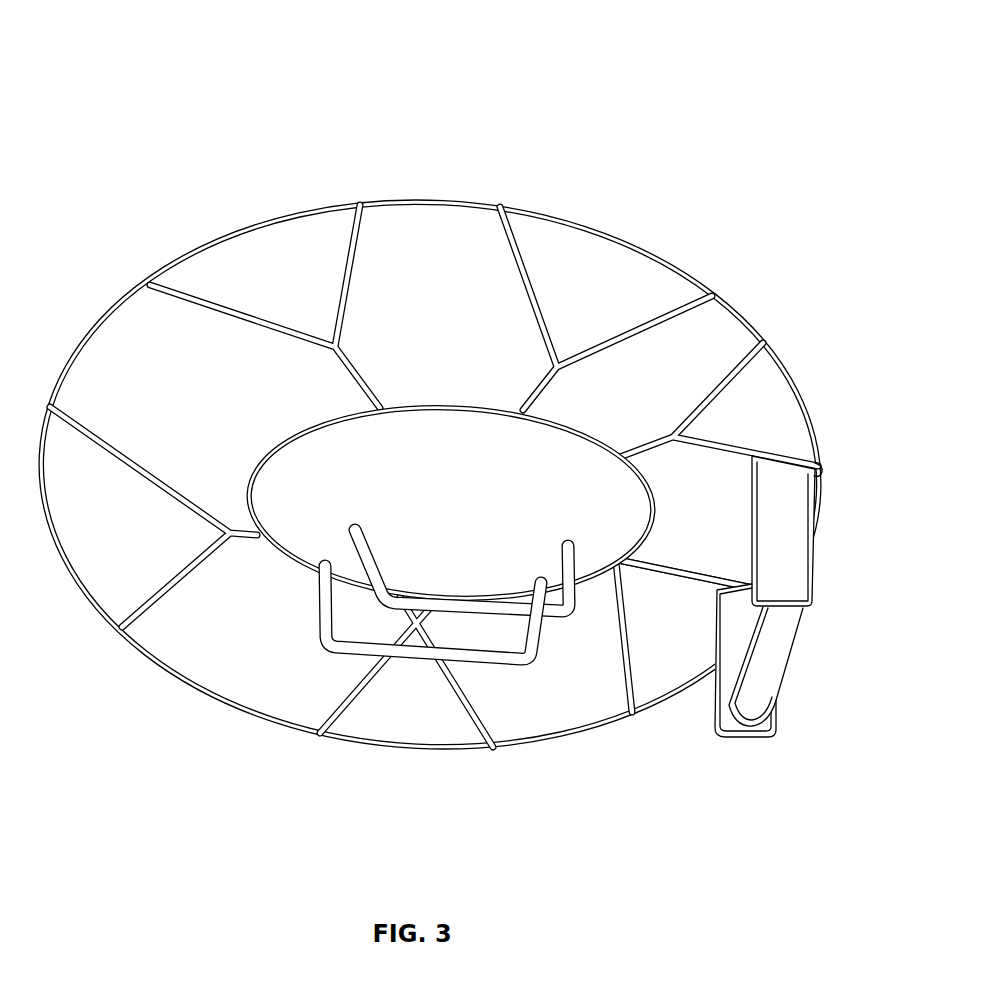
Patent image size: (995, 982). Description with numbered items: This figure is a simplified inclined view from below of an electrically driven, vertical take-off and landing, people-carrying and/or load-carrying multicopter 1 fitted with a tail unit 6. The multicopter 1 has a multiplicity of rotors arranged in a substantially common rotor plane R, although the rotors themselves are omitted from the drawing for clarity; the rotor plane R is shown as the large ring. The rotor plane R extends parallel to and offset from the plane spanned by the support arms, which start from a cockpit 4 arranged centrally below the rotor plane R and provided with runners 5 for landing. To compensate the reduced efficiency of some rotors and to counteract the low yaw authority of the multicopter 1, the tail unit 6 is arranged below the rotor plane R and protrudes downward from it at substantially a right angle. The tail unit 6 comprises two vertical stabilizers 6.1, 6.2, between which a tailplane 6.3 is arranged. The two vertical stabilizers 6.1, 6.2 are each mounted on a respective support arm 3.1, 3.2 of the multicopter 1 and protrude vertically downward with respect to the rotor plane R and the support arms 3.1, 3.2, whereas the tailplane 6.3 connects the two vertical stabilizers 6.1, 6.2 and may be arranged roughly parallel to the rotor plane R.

The multicopter 1 is at (461, 475).
The rotor plane R is at (199, 694).
The support arm 3.1 is at (700, 582).
The support arm 3.2 is at (725, 450).
The cockpit 4 is at (295, 533).
The runners 5 is at (480, 605).
The tail unit 6 is at (769, 671).
The vertical stabilizer 6.1 is at (732, 727).
The vertical stabilizer 6.2 is at (788, 492).
The tailplane 6.3 is at (811, 666).